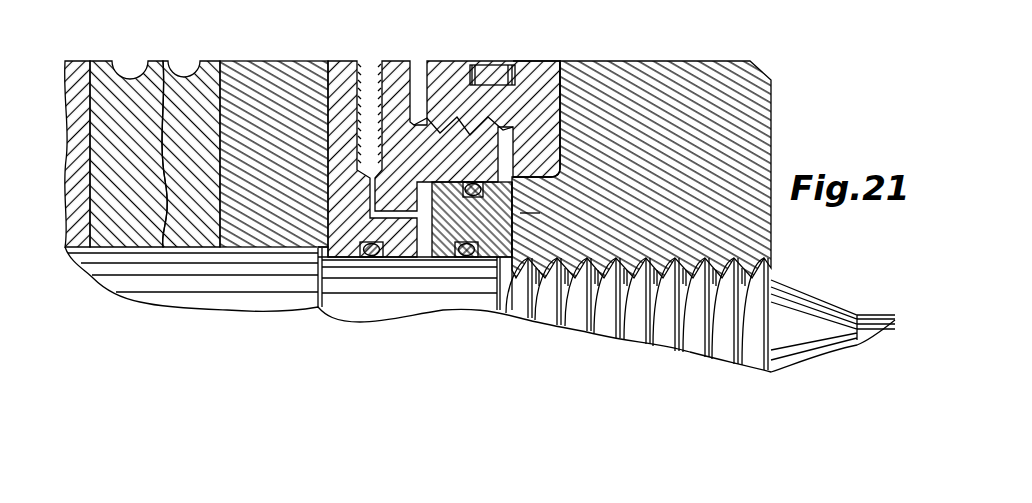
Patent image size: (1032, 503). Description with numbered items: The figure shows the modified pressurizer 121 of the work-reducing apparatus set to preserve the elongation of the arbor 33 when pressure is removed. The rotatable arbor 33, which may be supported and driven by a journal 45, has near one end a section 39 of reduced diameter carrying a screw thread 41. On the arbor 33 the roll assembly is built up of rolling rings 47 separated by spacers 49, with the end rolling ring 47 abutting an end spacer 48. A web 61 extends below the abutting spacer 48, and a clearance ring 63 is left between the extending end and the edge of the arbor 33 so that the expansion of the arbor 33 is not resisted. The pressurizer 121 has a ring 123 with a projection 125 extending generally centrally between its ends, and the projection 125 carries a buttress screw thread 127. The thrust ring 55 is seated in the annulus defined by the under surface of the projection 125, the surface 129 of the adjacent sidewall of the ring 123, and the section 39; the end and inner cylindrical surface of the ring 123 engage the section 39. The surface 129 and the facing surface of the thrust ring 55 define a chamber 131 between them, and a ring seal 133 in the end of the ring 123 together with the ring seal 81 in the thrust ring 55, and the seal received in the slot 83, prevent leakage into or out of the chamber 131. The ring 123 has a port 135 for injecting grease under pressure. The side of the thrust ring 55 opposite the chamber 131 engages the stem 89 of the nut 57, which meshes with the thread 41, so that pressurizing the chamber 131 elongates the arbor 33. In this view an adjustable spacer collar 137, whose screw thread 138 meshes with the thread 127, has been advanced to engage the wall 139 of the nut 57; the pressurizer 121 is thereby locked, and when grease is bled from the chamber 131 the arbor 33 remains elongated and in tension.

The arbor 33 is at (130, 303).
The section of reduced diameter 39 is at (325, 302).
The screw thread 41 is at (687, 310).
The journal 45 is at (815, 308).
The rolling ring 47 is at (150, 62).
The end spacer 48 is at (258, 66).
The spacer 49 is at (80, 62).
The thrust ring 55 is at (530, 213).
The nut 57 is at (763, 118).
The web 61 is at (400, 300).
The clearance ring 63 is at (272, 300).
The ring seal 81 is at (503, 300).
The slot 83 is at (477, 197).
The stem 89 is at (478, 258).
The pressurizer 121 is at (718, 48).
The ring 123 is at (340, 60).
The projection 125 is at (440, 150).
The buttress screw thread 127 is at (550, 77).
The surface 129 is at (410, 300).
The chamber 131 is at (437, 300).
The ring seal 133 is at (362, 295).
The port 135 is at (372, 66).
The adjustable spacer collar 137 is at (473, 92).
The screw thread 138 is at (508, 120).
The wall 139 is at (550, 80).